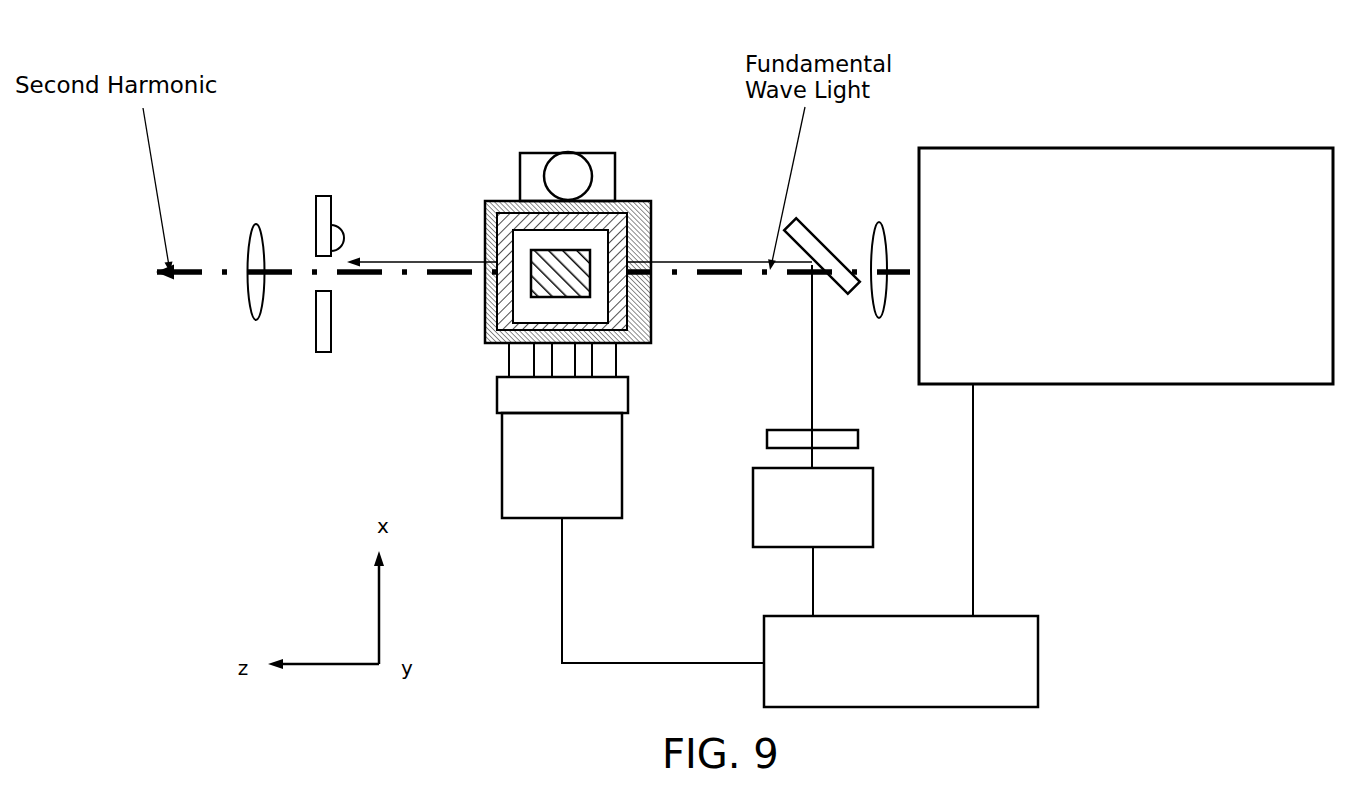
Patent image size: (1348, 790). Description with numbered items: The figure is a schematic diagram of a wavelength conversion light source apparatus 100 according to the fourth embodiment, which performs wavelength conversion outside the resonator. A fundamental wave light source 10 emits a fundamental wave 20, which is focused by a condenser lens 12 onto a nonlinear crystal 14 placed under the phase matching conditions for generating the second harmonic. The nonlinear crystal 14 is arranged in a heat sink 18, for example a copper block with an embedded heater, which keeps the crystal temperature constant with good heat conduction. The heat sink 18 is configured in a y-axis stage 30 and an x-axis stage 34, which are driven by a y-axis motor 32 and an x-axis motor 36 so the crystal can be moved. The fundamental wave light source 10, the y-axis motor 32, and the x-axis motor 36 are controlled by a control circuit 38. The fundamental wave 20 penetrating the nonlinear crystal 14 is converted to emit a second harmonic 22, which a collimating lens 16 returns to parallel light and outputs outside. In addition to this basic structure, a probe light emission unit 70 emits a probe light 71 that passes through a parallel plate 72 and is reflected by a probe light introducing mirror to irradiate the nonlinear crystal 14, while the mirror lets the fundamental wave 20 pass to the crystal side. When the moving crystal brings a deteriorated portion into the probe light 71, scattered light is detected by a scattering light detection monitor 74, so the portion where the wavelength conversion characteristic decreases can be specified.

The wavelength conversion light source apparatus 100 is at (665, 45).
The fundamental wave light source 10 is at (1006, 148).
The condenser lens 12 is at (879, 318).
The nonlinear crystal 14 is at (588, 248).
The collimating lens 16 is at (256, 227).
The heat sink 18 is at (525, 312).
The fundamental wave 20 is at (748, 274).
The second harmonic 22 is at (427, 278).
The y-axis stage 30 is at (652, 217).
The y-axis motor 32 is at (570, 158).
The x-axis stage 34 is at (617, 343).
The x-axis motor 36 is at (622, 500).
The control circuit 38 is at (1038, 638).
The probe light emission unit 70 is at (873, 527).
The probe light 71 is at (812, 335).
The parallel plate 72 is at (858, 437).
The scattering light detection monitor 74 is at (331, 200).